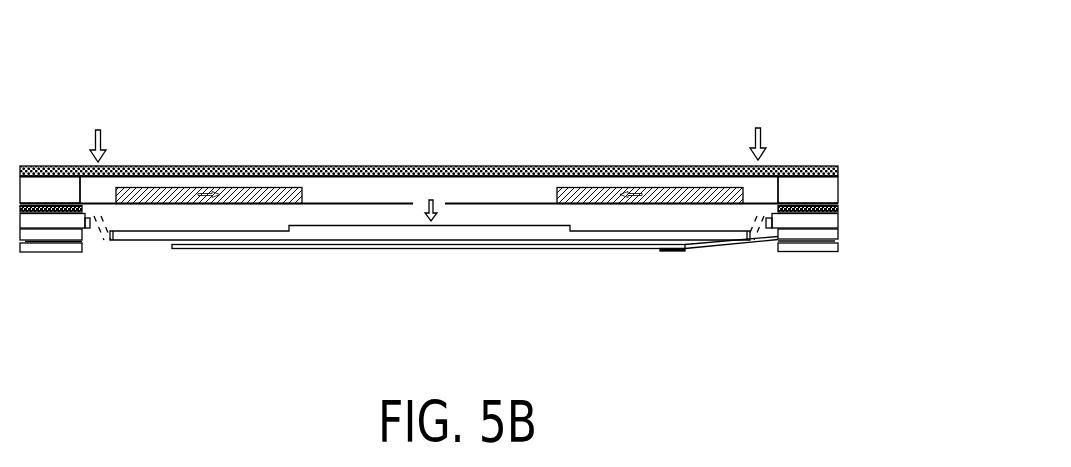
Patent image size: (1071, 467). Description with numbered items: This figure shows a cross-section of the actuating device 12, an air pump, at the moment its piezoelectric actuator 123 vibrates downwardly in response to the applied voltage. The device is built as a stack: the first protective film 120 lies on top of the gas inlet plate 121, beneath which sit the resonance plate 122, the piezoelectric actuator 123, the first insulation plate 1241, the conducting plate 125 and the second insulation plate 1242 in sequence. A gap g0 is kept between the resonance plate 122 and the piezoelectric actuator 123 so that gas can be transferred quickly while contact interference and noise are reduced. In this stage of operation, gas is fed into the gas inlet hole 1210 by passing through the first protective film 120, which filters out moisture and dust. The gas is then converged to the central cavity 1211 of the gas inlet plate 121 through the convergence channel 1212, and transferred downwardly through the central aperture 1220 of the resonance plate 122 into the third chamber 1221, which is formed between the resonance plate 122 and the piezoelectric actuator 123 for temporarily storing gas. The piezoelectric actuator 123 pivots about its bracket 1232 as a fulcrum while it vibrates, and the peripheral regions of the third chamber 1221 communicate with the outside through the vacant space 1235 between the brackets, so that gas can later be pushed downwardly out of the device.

The actuating device 12 is at (886, 39).
The first protective film 120 is at (631, 168).
The gas inlet plate 121 is at (800, 192).
The resonance plate 122 is at (345, 202).
The piezoelectric actuator 123 is at (825, 222).
The conducting plate 125 is at (832, 240).
The gas inlet hole 1210 is at (102, 188).
The central cavity 1211 is at (478, 195).
The convergence channel 1212 is at (247, 192).
The central aperture 1220 is at (422, 197).
The third chamber 1221 is at (380, 212).
The bracket 1232 is at (92, 210).
The vacant space 1235 is at (94, 212).
The first insulation plate 1241 is at (818, 235).
The second insulation plate 1242 is at (795, 246).
The gap g0 is at (827, 202).